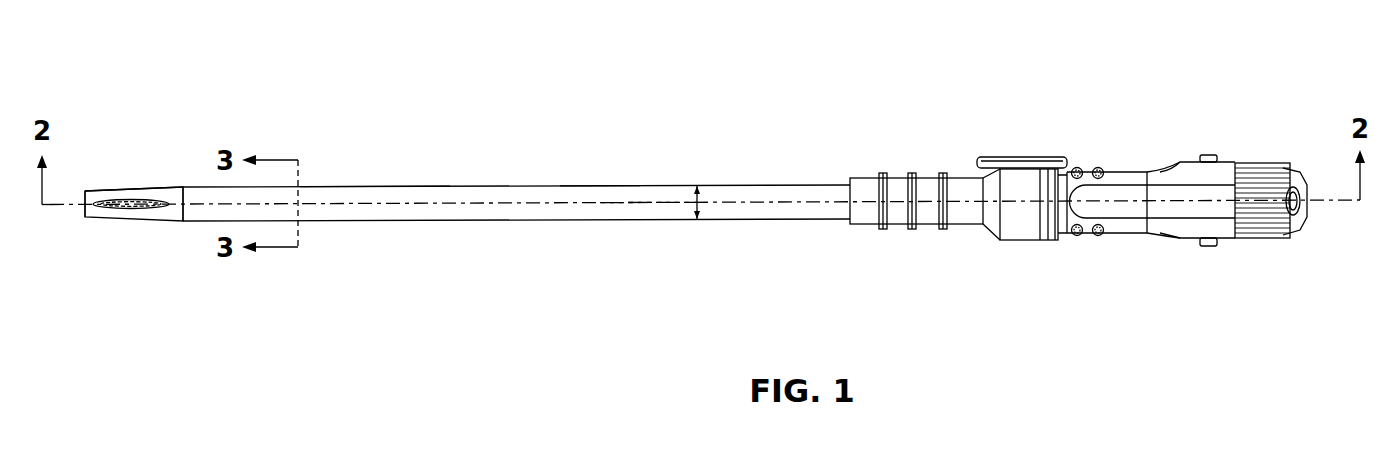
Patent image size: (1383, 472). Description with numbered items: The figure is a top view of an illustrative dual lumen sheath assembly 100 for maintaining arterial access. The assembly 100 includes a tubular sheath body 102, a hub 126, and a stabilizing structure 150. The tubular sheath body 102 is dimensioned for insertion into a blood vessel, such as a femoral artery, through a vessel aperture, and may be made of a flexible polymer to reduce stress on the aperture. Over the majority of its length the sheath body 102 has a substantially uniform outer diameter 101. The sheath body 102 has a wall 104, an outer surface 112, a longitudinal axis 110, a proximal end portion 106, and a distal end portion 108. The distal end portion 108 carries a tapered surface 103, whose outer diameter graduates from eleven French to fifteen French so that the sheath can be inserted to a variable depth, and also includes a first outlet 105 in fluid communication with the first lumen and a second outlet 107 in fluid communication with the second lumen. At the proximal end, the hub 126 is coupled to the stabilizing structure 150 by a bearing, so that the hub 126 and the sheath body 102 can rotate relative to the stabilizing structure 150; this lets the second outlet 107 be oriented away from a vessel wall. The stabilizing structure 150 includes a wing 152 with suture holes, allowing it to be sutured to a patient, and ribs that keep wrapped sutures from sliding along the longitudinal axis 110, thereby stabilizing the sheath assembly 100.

The dual lumen sheath assembly 100 is at (148, 38).
The outer diameter 101 is at (701, 201).
The tubular sheath body 102 is at (522, 170).
The tapered surface 103 is at (143, 186).
The wall 104 is at (375, 186).
The first outlet 105 is at (88, 207).
The proximal end portion 106 is at (840, 155).
The second outlet 107 is at (135, 212).
The distal end portion 108 is at (90, 164).
The longitudinal axis 110 is at (640, 201).
The outer surface 112 is at (582, 192).
The hub 126 is at (1185, 138).
The stabilizing structure 150 is at (1012, 236).
The wing 152 is at (1012, 157).